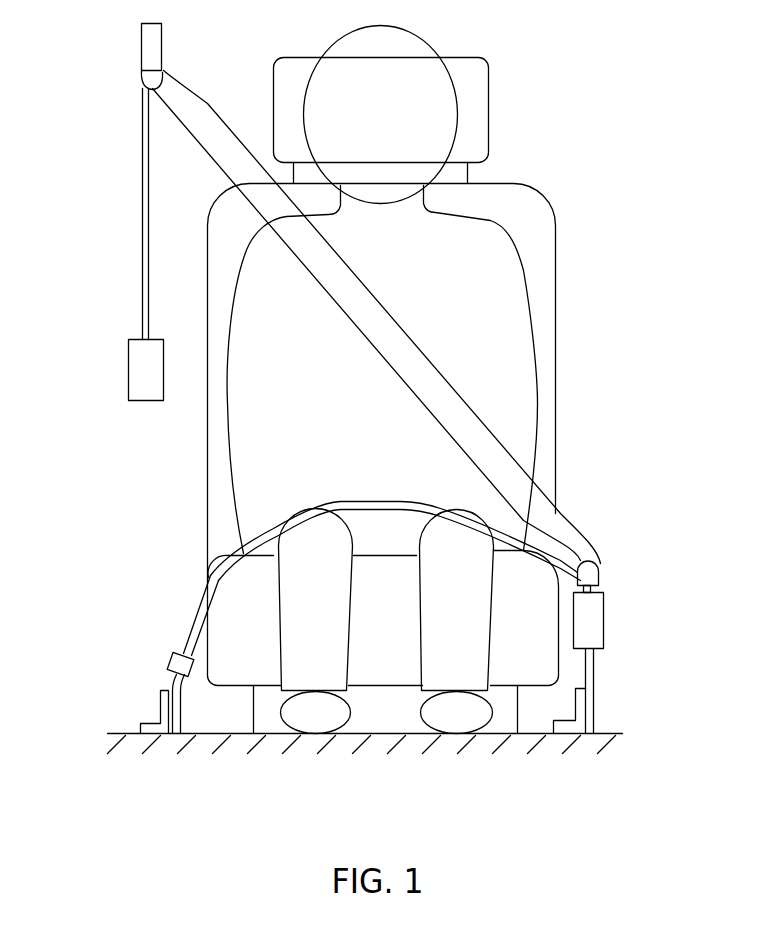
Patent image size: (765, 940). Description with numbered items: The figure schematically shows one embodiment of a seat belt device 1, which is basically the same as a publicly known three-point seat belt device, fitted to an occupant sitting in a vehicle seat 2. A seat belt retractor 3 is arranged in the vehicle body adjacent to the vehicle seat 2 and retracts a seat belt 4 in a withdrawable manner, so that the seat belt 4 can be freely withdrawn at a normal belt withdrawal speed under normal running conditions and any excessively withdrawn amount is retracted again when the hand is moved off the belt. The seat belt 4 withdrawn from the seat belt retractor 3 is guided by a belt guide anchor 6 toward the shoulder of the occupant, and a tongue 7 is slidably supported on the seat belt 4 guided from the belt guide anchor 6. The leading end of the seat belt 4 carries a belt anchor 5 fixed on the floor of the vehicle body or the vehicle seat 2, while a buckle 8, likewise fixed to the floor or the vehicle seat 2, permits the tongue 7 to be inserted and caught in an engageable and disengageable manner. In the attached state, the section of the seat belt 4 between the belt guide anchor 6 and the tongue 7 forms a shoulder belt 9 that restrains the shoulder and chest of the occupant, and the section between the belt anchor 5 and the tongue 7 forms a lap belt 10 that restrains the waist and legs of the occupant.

The seat belt device 1 is at (116, 214).
The vehicle seat 2 is at (215, 600).
The seat belt retractor 3 is at (128, 371).
The seat belt 4 is at (466, 396).
The belt anchor 5 is at (168, 683).
The belt guide anchor 6 is at (148, 42).
The tongue 7 is at (590, 567).
The buckle 8 is at (604, 620).
The shoulder belt 9 is at (393, 358).
The lap belt 10 is at (390, 502).